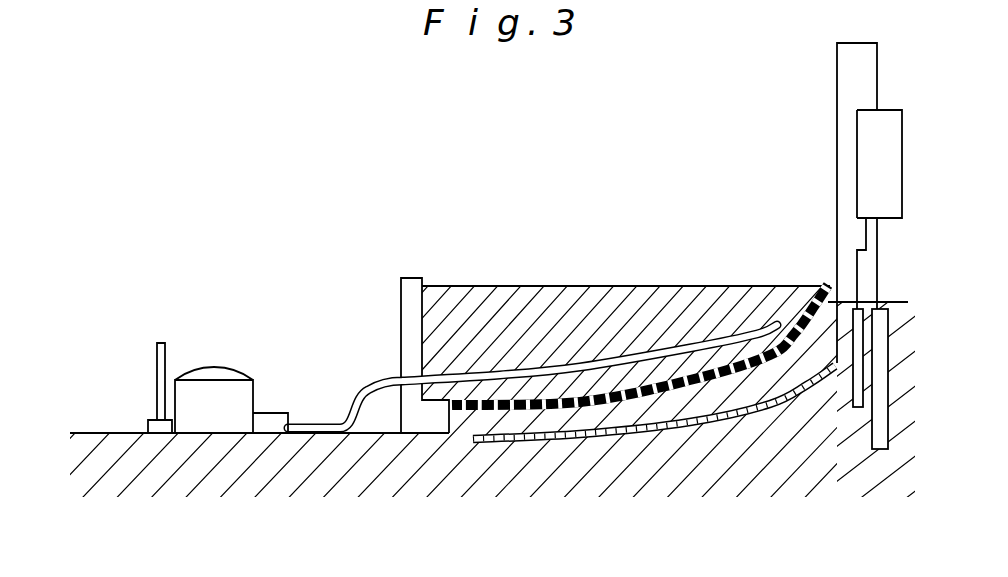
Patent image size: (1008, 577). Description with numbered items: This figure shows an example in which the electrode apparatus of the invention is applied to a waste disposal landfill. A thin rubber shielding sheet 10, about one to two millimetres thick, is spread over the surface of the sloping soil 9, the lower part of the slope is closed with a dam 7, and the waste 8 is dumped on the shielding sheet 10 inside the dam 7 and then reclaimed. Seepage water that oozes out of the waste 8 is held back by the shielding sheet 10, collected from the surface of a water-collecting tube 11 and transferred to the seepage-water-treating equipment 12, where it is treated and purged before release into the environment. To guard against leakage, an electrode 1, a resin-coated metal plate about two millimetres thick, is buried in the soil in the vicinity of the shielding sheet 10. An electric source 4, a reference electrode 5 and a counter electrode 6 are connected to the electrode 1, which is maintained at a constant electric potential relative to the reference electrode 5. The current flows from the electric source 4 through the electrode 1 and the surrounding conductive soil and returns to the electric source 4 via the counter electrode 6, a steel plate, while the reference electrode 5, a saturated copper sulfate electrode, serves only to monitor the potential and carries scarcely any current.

The electrode 1 is at (598, 440).
The electric source 4 is at (870, 163).
The reference electrode 5 is at (857, 410).
The counter electrode 6 is at (881, 451).
The dam 7 is at (413, 278).
The waste 8 is at (563, 292).
The sloping soil 9 is at (750, 458).
The shielding sheet 10 is at (460, 407).
The water-collecting tube 11 is at (415, 385).
The seepage-water-treating equipment 12 is at (212, 367).